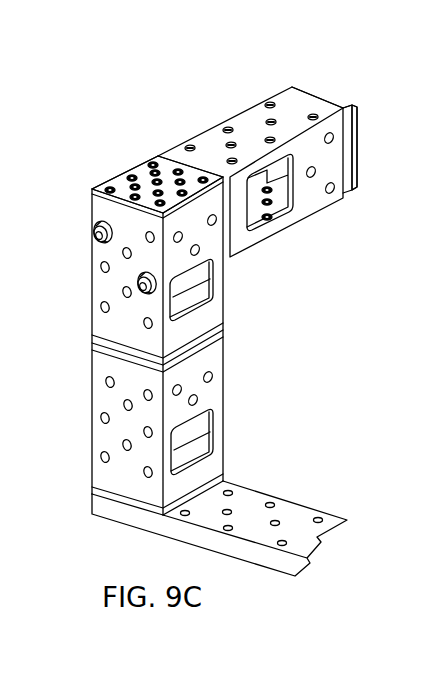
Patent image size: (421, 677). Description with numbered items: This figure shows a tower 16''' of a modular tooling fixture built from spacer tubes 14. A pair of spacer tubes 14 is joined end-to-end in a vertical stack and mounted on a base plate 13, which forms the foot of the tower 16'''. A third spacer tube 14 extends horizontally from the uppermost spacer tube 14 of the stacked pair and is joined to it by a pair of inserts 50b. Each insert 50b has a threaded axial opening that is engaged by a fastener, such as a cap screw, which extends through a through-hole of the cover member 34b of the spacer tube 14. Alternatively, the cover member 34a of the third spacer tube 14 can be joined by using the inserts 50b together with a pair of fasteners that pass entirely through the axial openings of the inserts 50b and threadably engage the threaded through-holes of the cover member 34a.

The base plate 13 is at (290, 505).
The spacer tube 14 is at (317, 207).
The tower 16''' is at (210, 277).
The cover member 34a is at (323, 102).
The cover member 34b is at (160, 157).
The insert 50b is at (96, 233).